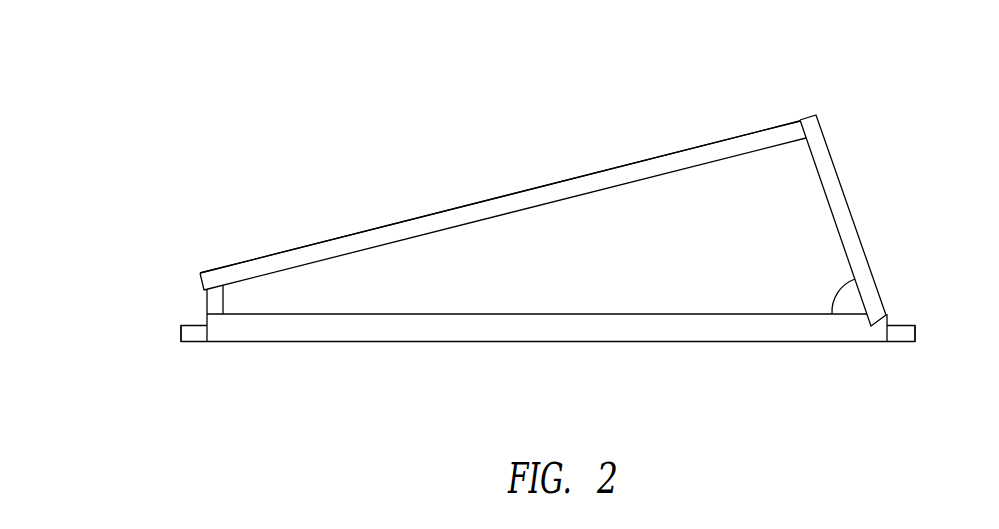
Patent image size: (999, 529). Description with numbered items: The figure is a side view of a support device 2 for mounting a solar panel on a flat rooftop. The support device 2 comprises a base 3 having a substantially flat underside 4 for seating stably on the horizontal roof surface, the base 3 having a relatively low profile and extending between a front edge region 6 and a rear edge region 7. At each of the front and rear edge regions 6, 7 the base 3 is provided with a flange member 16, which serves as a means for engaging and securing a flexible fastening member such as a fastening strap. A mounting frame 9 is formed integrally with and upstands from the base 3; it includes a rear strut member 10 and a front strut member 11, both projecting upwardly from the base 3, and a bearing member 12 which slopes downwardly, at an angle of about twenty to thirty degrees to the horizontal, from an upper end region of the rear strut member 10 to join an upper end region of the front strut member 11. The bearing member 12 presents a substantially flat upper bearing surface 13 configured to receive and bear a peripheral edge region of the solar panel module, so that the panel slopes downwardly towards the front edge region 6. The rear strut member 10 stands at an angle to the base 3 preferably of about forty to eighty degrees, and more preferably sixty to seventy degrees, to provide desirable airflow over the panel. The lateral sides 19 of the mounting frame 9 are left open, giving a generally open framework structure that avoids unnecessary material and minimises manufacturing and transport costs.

The support device 2 is at (420, 138).
The base 3 is at (575, 362).
The underside 4 is at (392, 342).
The front edge region 6 is at (160, 324).
The rear edge region 7 is at (925, 318).
The mounting frame 9 is at (852, 145).
The rear strut member 10 is at (848, 229).
The front strut member 11 is at (212, 303).
The bearing member 12 is at (580, 188).
The upper bearing surface 13 is at (540, 186).
The flange member 16 is at (191, 333).
The lateral sides 19 is at (737, 241).